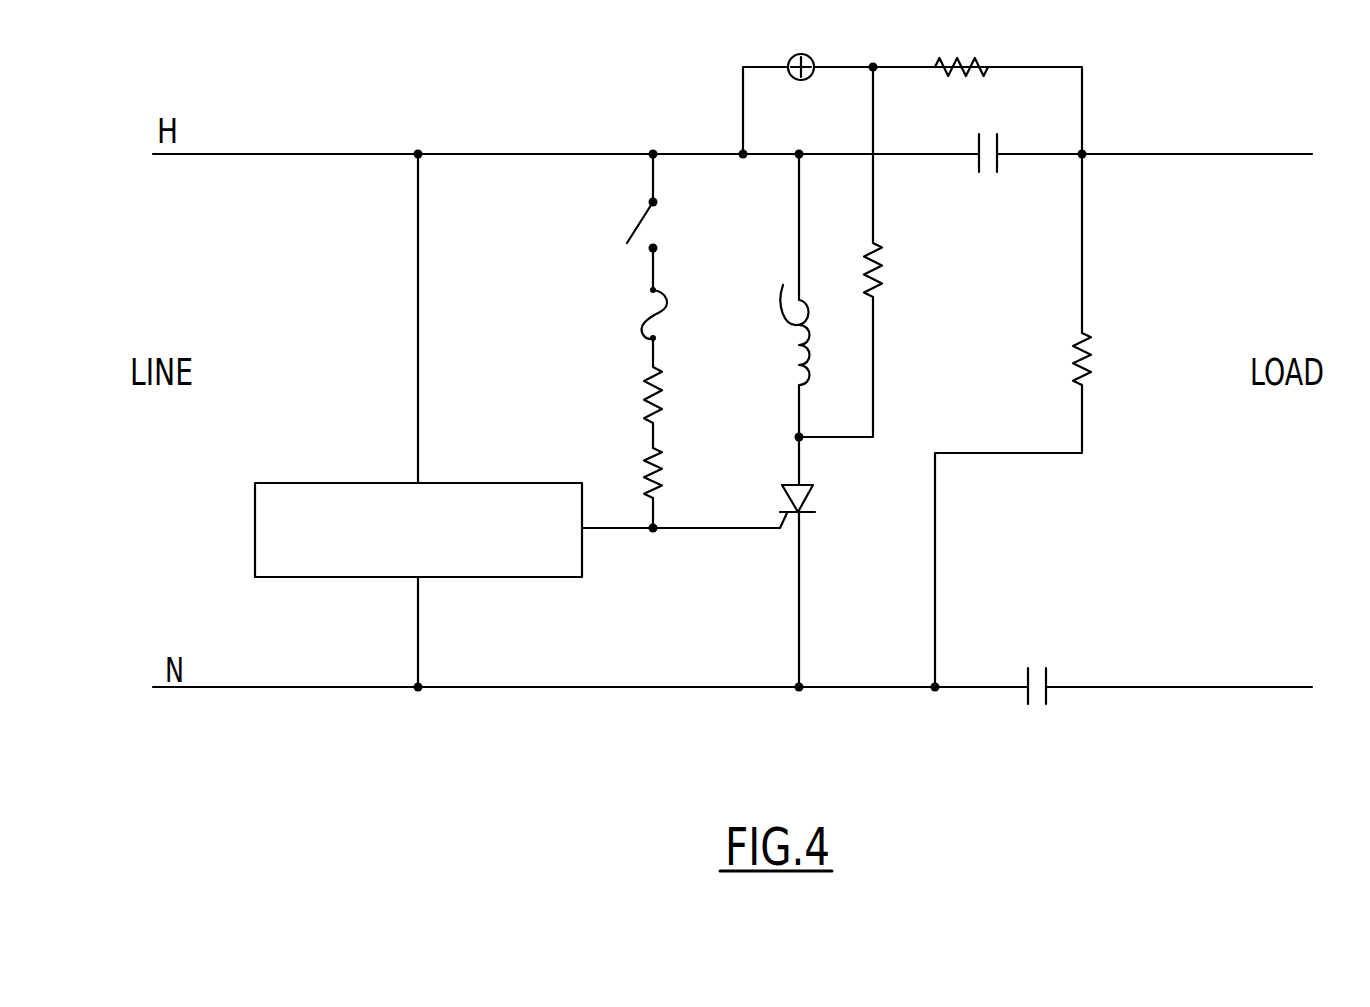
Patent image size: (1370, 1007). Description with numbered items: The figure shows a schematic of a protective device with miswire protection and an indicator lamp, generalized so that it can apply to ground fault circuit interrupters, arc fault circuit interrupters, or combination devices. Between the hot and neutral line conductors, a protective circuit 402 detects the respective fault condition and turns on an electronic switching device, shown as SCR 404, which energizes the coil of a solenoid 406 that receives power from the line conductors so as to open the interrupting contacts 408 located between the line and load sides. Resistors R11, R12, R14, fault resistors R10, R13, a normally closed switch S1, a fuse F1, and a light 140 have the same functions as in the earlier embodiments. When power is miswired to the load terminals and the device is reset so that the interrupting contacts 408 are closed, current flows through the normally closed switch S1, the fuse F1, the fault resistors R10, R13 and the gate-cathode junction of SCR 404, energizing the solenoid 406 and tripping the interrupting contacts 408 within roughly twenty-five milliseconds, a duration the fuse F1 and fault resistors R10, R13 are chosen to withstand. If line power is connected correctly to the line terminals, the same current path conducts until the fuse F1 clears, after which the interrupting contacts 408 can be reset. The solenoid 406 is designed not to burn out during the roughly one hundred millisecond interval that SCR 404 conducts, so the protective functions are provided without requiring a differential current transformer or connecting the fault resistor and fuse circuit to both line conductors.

The light 140 is at (812, 57).
The protective circuit 402 is at (313, 483).
The SCR 404 is at (811, 500).
The solenoid 406 is at (783, 285).
The interrupting contacts 408 is at (990, 173).
The fault resistor R10 is at (688, 393).
The resistor R11 is at (1047, 420).
The resistor R12 is at (961, 48).
The fault resistor R13 is at (688, 488).
The resistor R14 is at (876, 252).
The normally closed switch S1 is at (619, 222).
The fuse F1 is at (673, 314).